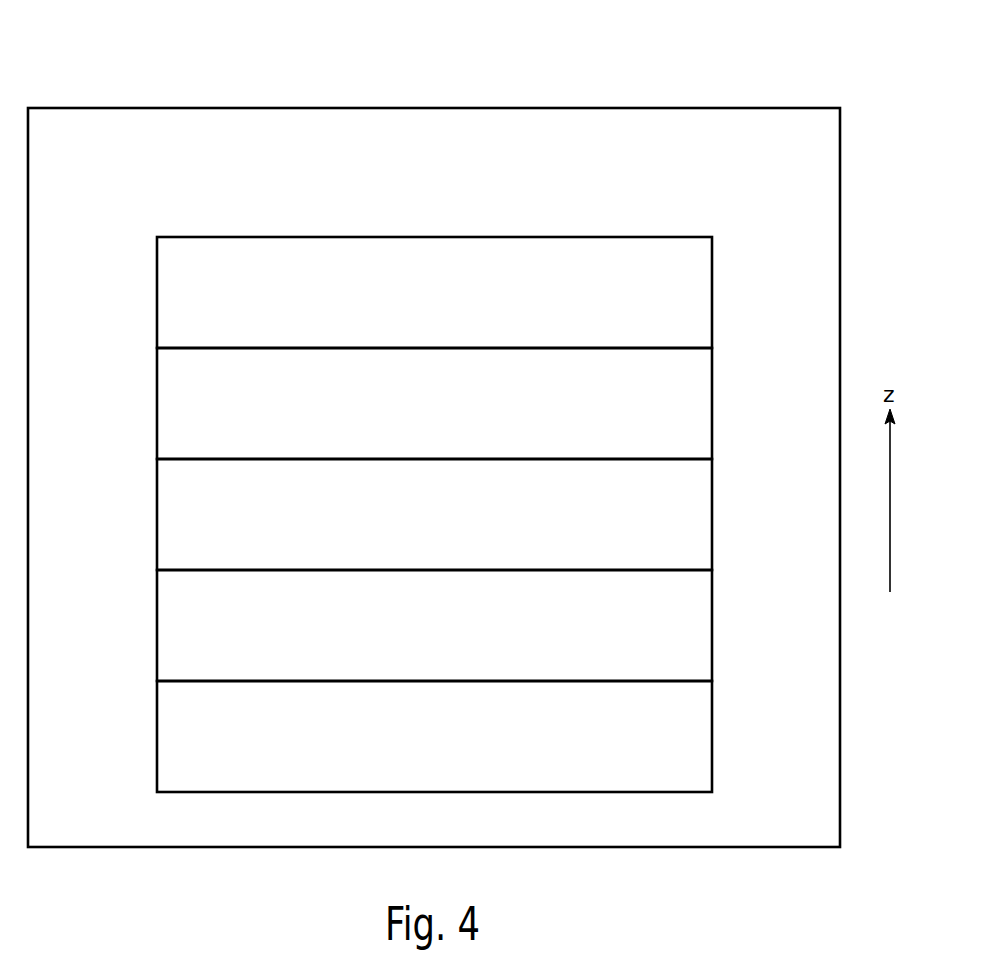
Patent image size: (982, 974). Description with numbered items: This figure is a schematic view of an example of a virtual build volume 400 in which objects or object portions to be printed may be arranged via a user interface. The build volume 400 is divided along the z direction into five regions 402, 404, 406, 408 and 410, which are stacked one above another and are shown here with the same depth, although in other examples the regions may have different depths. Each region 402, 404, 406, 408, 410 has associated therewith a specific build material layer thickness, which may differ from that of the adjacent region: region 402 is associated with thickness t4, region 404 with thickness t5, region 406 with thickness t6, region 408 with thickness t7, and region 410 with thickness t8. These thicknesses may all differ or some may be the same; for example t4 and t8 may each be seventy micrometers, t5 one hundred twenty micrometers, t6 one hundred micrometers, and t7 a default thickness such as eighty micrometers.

The build volume 400 is at (429, 108).
The region 402 is at (713, 735).
The region 404 is at (713, 624).
The region 406 is at (713, 513).
The region 408 is at (713, 402).
The region 410 is at (713, 291).